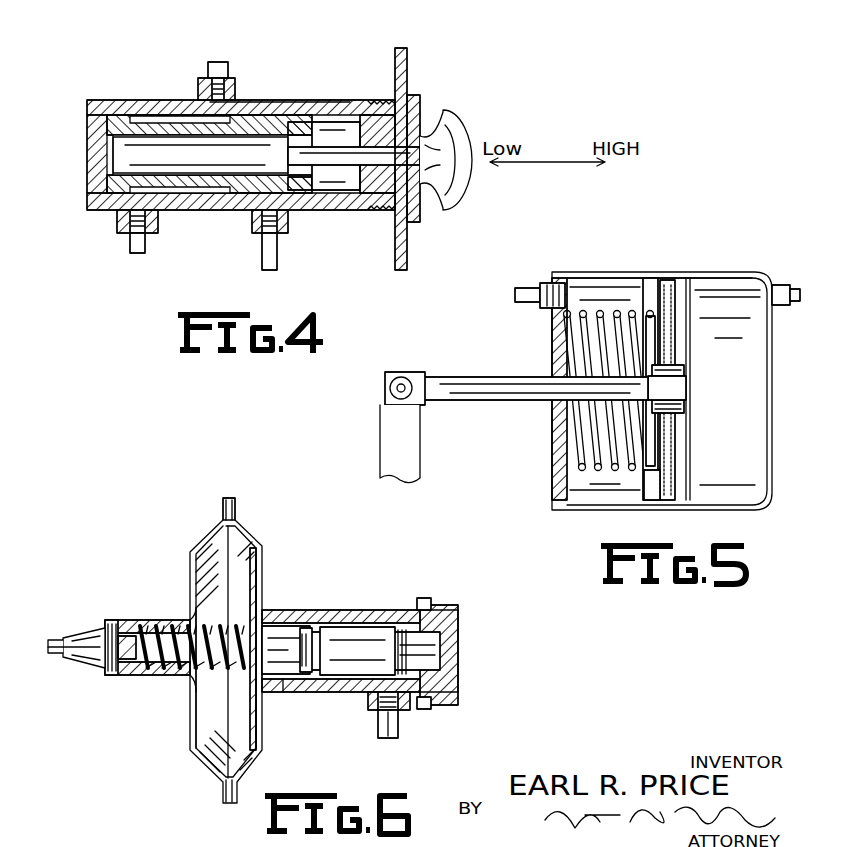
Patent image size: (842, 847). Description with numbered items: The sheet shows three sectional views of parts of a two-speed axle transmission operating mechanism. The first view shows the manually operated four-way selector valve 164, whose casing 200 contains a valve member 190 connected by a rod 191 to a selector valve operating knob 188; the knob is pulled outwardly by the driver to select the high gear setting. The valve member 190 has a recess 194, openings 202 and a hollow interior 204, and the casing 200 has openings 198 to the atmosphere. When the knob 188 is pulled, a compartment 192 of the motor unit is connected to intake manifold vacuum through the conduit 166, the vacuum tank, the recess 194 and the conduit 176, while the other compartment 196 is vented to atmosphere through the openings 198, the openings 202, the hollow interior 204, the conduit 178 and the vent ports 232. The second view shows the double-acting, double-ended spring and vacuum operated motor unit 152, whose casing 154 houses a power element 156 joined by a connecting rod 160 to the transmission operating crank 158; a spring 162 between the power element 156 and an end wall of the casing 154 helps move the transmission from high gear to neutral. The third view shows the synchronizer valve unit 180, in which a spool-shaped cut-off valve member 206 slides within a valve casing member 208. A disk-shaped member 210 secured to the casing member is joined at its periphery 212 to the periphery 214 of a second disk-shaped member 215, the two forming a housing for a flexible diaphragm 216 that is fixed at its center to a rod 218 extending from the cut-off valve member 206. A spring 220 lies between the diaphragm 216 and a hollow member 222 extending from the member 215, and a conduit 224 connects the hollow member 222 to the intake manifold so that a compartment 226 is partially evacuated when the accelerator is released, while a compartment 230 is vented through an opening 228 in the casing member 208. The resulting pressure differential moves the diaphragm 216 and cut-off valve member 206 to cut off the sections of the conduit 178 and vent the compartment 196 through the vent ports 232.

In FIG. 5, the motor unit 152 is at (700, 272).
In FIG. 5, the casing 154 is at (585, 275).
In FIG. 5, the power element 156 is at (672, 442).
In FIG. 5, the transmission operating crank 158 is at (383, 440).
In FIG. 5, the connecting rod 160 is at (470, 385).
In FIG. 5, the spring 162 is at (620, 312).
In FIG. 4, the selector valve 164 is at (263, 100).
In FIG. 4, the conduit 166 is at (216, 66).
In FIG. 4, the conduit 176 is at (280, 256).
In FIG. 5, the conduit 176 is at (523, 288).
In FIG. 4, the conduit 178 is at (132, 244).
In FIG. 5, the conduit 178 is at (782, 288).
In FIG. 6, the conduit 178 is at (398, 722).
In FIG. 4, the valve unit 180 is at (283, 40).
In FIG. 6, the valve unit 180 is at (272, 588).
In FIG. 4, the selector valve operating knob 188 is at (466, 138).
In FIG. 4, the valve member 190 is at (142, 127).
In FIG. 4, the rod 191 is at (325, 153).
In FIG. 5, the compartment 192 is at (583, 495).
In FIG. 4, the recess 194 is at (183, 195).
In FIG. 5, the compartment 196 is at (757, 383).
In FIG. 4, the openings 198 is at (368, 97).
In FIG. 4, the casing 200 is at (240, 106).
In FIG. 4, the openings 202 is at (265, 188).
In FIG. 4, the hollow interior 204 is at (123, 160).
In FIG. 6, the cut-off valve member 206 is at (358, 640).
In FIG. 6, the valve casing member 208 is at (330, 692).
In FIG. 6, the disk-shaped member 210 is at (250, 530).
In FIG. 6, the periphery 212 is at (238, 515).
In FIG. 6, the periphery 214 is at (222, 505).
In FIG. 6, the disk-shaped member 215 is at (193, 566).
In FIG. 6, the flexible diaphragm 216 is at (248, 695).
In FIG. 6, the rod 218 is at (273, 645).
In FIG. 6, the spring 220 is at (128, 672).
In FIG. 6, the hollow member 222 is at (175, 628).
In FIG. 6, the conduit 224 is at (57, 645).
In FIG. 6, the compartment 226 is at (200, 745).
In FIG. 6, the opening 228 is at (283, 694).
In FIG. 6, the compartment 230 is at (260, 556).
In FIG. 6, the vent ports 232 is at (428, 606).